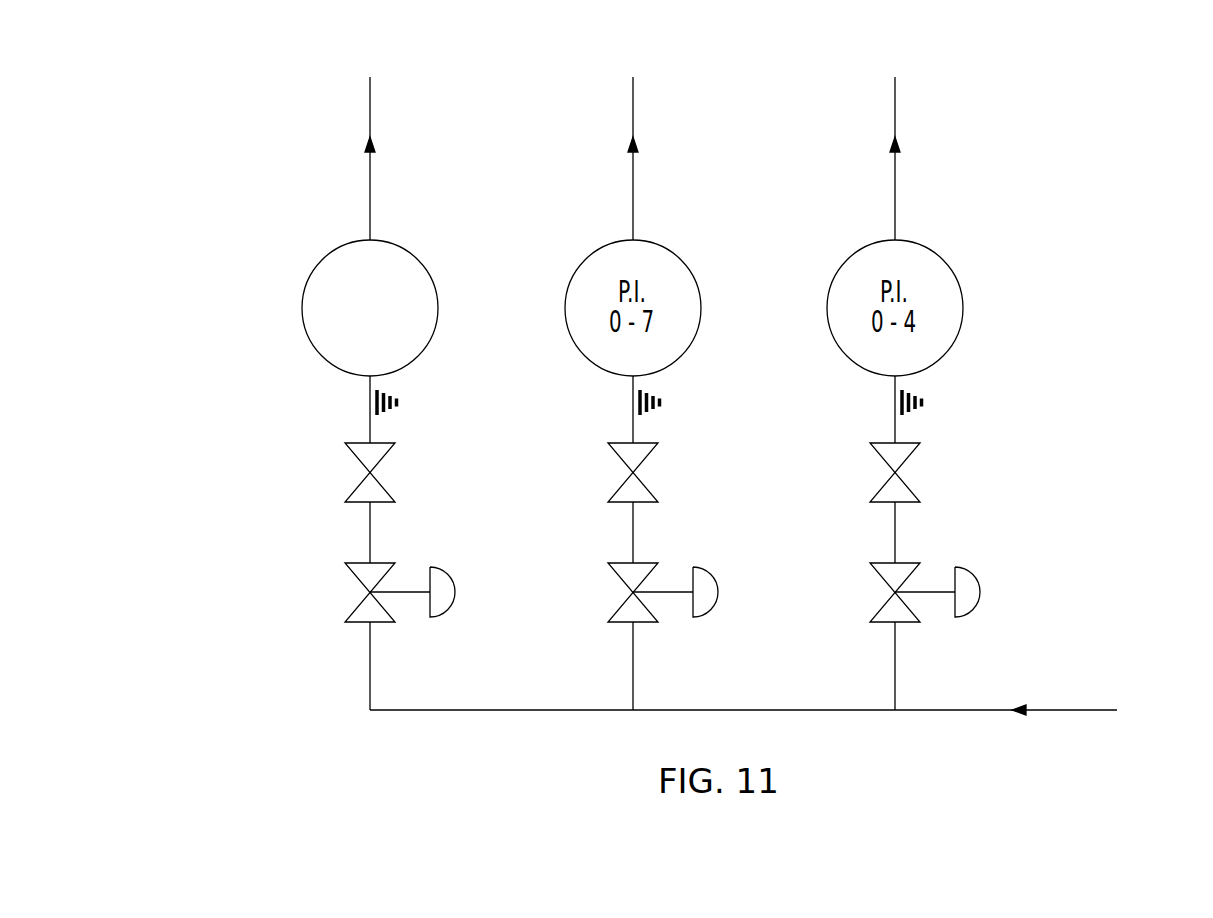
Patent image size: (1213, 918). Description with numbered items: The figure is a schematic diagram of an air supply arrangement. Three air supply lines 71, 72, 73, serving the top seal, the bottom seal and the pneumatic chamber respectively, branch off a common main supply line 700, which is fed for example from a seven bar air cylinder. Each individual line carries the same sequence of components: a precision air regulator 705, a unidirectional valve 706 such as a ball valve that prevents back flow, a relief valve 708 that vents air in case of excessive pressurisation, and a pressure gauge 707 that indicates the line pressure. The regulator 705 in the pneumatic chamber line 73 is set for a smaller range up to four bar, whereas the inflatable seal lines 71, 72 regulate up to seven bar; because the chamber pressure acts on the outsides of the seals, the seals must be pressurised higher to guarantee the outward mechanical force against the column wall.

The main supply line 700 is at (1062, 710).
The precision air regulator 705 is at (292, 583).
The unidirectional valve 706 is at (259, 472).
The pressure gauge 707 is at (247, 303).
The relief valve 708 is at (310, 405).
The air supply line 71 is at (372, 112).
The air supply line 72 is at (635, 112).
The pneumatic chamber line 73 is at (897, 112).